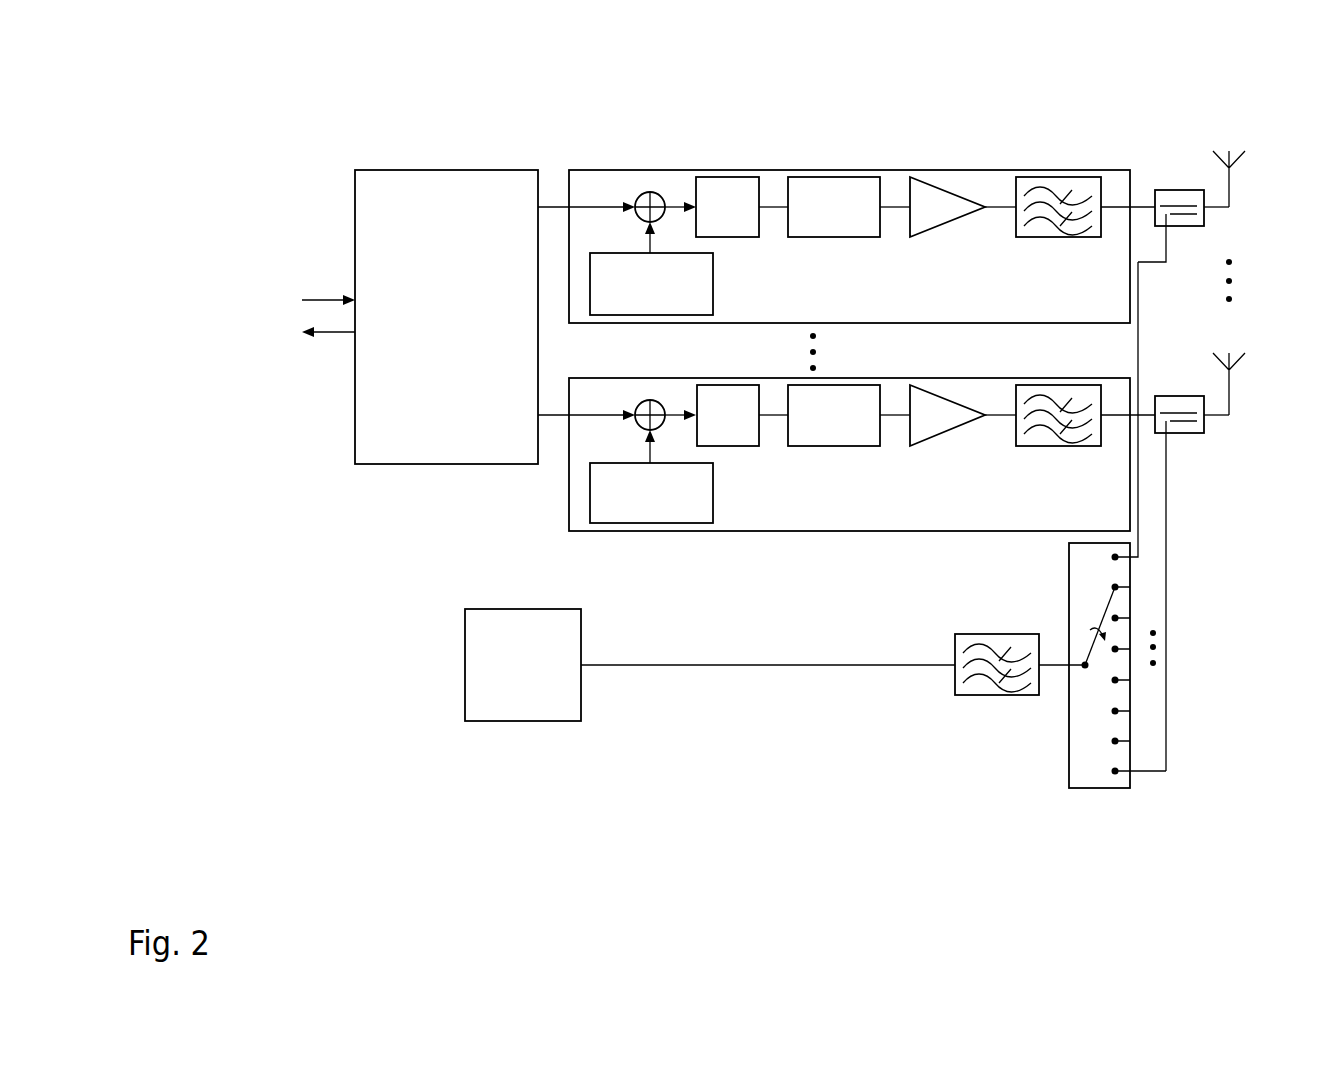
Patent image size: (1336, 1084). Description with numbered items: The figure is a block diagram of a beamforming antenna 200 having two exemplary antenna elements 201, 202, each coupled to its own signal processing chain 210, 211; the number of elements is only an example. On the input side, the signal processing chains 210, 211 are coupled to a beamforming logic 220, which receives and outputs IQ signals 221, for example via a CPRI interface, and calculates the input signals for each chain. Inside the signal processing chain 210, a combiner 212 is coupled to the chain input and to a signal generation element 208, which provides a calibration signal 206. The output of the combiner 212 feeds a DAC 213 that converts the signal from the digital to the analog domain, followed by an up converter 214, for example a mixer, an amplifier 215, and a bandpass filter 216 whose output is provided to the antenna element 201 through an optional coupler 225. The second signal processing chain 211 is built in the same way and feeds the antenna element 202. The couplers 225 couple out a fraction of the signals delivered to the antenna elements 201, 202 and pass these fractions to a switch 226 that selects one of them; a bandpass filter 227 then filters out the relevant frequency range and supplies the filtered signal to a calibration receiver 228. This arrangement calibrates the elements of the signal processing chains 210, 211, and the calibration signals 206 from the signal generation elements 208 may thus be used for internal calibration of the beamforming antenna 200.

The beamforming antenna 200 is at (338, 814).
The antenna element 201 is at (1230, 153).
The antenna element 202 is at (1228, 396).
The calibration signal 206 is at (655, 242).
The signal generation element 208 is at (688, 314).
The signal processing chain 210 is at (580, 170).
The signal processing chain 211 is at (873, 533).
The combiner 212 is at (648, 193).
The DAC 213 is at (738, 176).
The up converter 214 is at (848, 176).
The amplifier 215 is at (933, 187).
The filter 216 is at (1048, 176).
The beamforming logic 220 is at (462, 170).
The IQ signals 221 is at (322, 297).
The coupler 225 is at (1164, 190).
The switch 226 is at (1093, 790).
The bandpass filter 227 is at (1003, 697).
The calibration receiver 228 is at (563, 718).